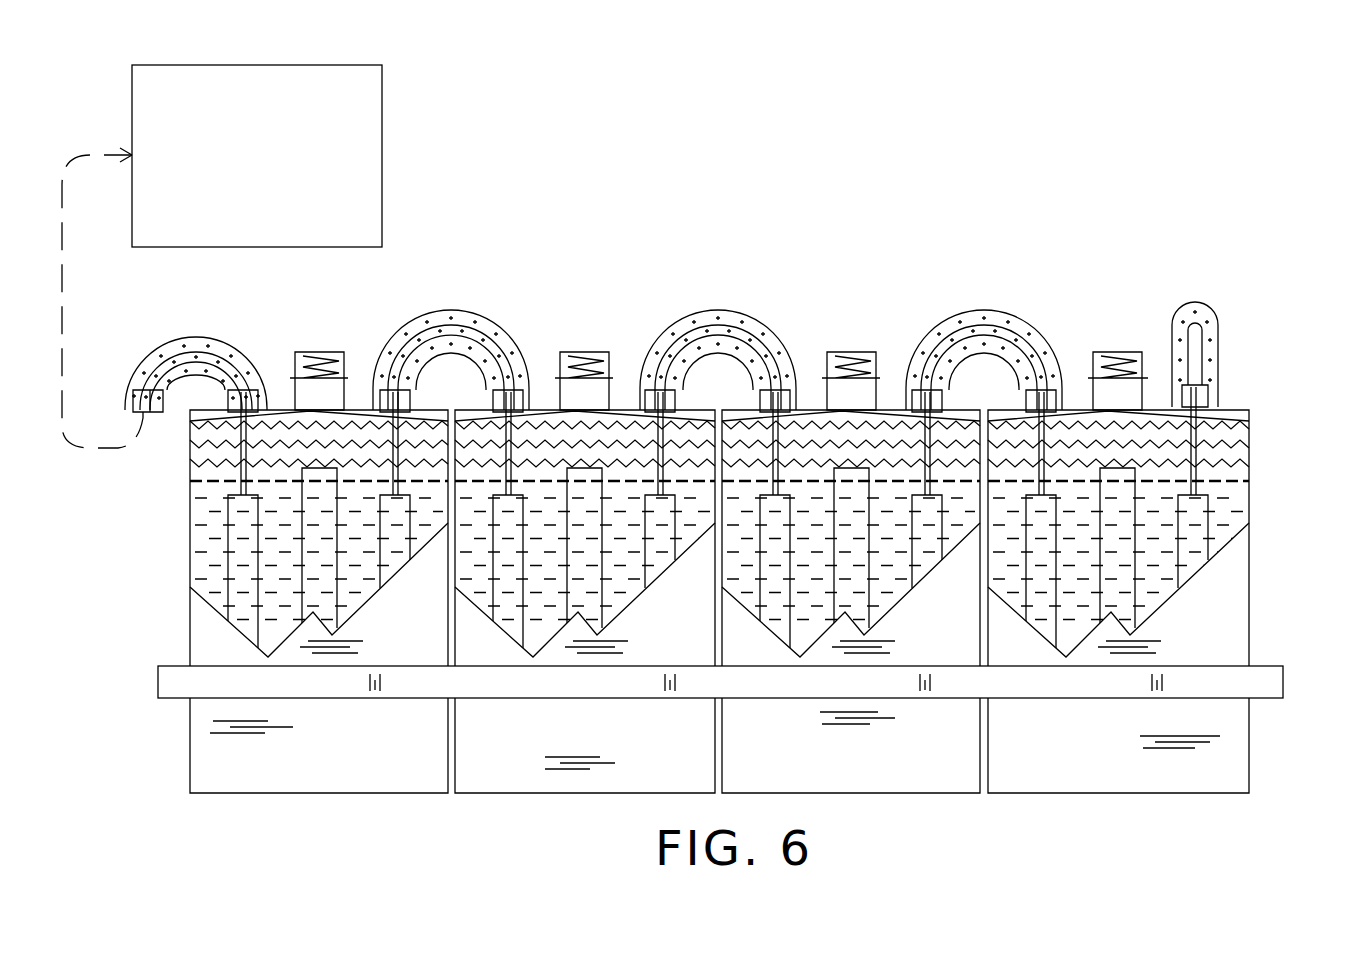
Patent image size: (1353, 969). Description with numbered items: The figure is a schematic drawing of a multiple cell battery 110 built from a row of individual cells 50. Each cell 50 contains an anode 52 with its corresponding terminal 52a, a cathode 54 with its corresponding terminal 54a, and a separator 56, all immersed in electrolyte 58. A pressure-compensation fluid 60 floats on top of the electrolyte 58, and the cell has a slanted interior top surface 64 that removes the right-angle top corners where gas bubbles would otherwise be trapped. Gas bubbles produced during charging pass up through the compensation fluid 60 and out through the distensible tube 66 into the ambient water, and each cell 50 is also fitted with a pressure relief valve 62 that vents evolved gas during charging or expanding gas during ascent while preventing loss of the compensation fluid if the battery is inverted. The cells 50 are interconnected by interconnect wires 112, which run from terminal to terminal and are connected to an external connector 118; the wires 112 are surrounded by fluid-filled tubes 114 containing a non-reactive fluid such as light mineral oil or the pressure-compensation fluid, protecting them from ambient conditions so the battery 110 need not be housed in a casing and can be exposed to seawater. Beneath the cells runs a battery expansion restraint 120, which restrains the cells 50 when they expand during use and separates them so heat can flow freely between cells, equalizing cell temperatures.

The cell 50 is at (384, 758).
The anode 52 is at (411, 536).
The terminal 52a is at (1244, 345).
The cathode 54 is at (235, 520).
The terminal 54a is at (256, 390).
The separator 56 is at (330, 593).
The electrolyte 58 is at (212, 544).
The pressure-compensation fluid 60 is at (217, 462).
The pressure relief valve 62 is at (342, 352).
The slanted interior top surface 64 is at (208, 411).
The distensible tube 66 is at (350, 384).
The battery 110 is at (1112, 165).
The interconnect wires 112 is at (183, 360).
The fluid-filled tubes 114 is at (228, 348).
The external connector 118 is at (384, 135).
The battery expansion restraint 120 is at (845, 680).